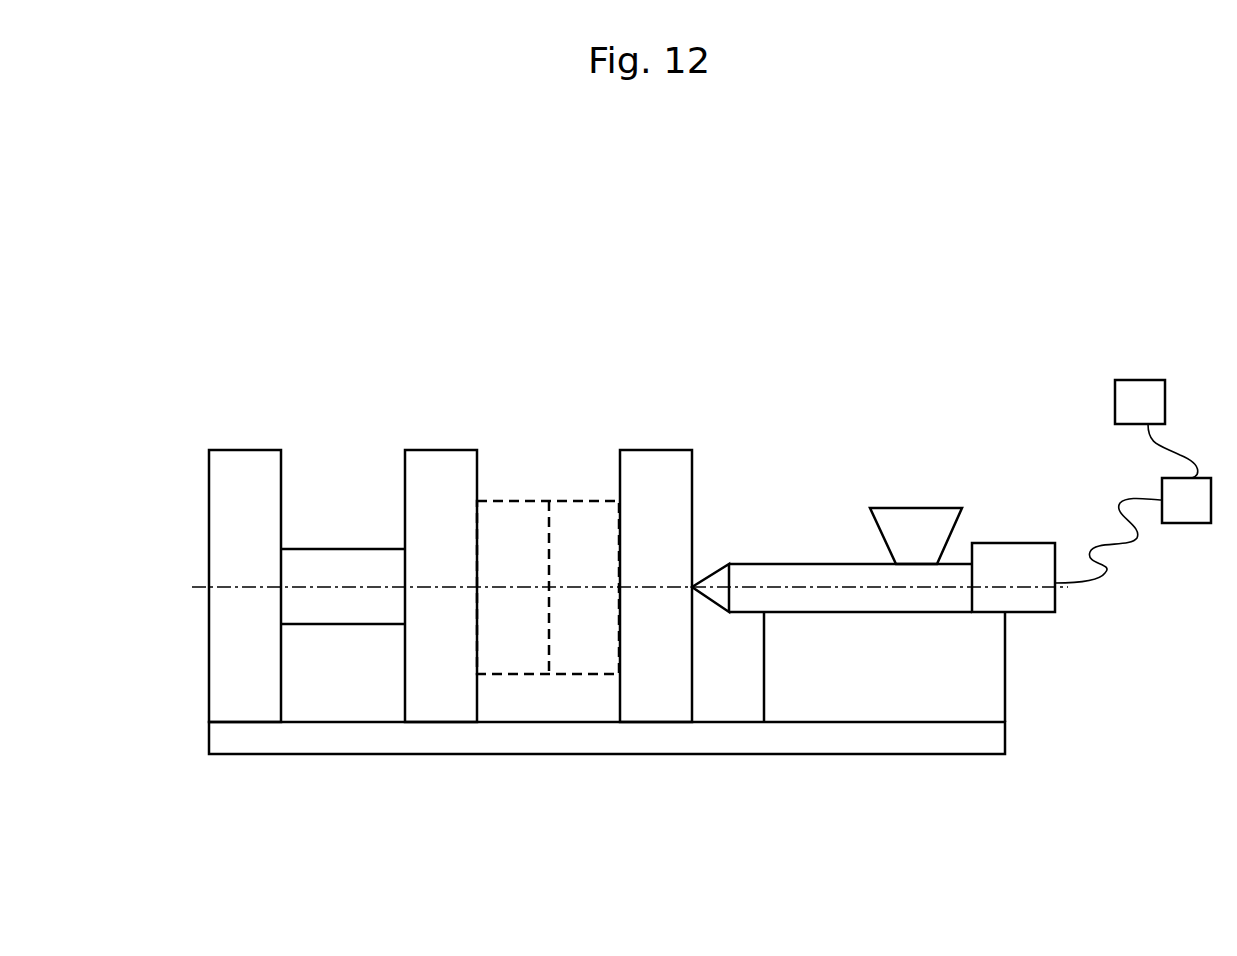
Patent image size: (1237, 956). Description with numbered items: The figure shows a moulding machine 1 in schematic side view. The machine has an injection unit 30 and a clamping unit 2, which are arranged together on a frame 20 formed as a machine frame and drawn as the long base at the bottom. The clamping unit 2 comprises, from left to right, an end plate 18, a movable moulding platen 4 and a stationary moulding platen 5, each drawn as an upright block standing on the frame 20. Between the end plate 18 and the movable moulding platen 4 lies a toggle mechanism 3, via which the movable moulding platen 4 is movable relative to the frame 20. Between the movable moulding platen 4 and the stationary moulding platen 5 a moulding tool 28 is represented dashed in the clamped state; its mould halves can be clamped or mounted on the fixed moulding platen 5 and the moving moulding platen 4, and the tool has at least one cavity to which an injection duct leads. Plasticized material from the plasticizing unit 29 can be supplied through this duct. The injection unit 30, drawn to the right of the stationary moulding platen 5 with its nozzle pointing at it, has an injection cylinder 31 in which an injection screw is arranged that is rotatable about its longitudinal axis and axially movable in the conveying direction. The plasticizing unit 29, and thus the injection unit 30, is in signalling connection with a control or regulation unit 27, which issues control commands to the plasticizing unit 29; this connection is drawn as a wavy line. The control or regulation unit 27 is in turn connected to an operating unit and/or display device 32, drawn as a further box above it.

The moulding machine 1 is at (325, 202).
The clamping unit 2 is at (545, 303).
The toggle mechanism 3 is at (304, 570).
The movable moulding platen 4 is at (433, 472).
The stationary moulding platen 5 is at (659, 472).
The end plate 18 is at (240, 467).
The frame 20 is at (587, 735).
The control or regulation unit 27 is at (1187, 513).
The moulding tool 28 is at (485, 428).
The plasticizing unit 29 is at (832, 551).
The injection unit 30 is at (793, 303).
The injection cylinder 31 is at (803, 577).
The display device 32 is at (1133, 391).